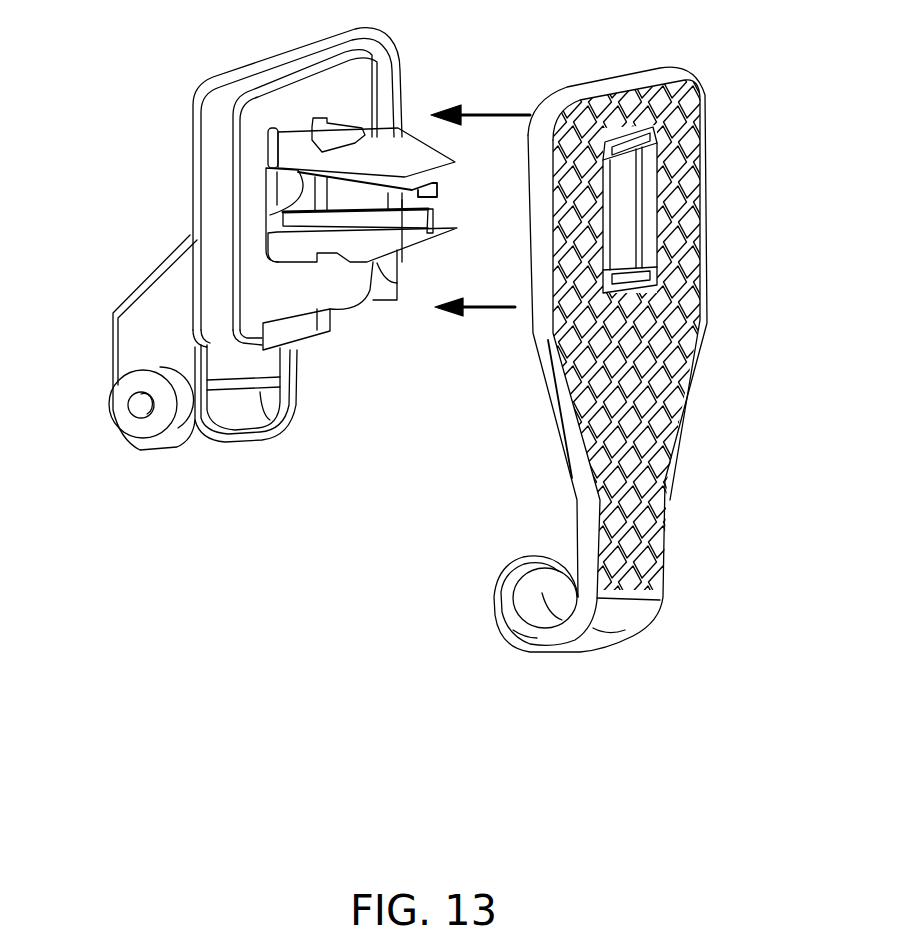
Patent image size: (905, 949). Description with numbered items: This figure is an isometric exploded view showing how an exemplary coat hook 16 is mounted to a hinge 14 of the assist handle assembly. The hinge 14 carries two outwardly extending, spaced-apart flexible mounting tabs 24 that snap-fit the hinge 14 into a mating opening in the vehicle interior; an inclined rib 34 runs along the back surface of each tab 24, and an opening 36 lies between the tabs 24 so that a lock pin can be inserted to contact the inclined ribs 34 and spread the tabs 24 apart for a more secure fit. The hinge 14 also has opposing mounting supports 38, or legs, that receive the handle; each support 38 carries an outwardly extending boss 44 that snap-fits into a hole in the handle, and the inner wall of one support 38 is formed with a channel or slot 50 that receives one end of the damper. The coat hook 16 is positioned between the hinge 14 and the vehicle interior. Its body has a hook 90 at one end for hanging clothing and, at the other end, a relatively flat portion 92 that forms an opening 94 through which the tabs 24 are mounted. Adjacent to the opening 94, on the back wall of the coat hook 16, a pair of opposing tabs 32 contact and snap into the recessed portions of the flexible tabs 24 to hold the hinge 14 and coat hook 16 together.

The hinge 14 is at (228, 77).
The coat hook 16 is at (627, 597).
The flexible mounting tabs 24 is at (370, 163).
The tabs 32 is at (700, 93).
The inclined rib 34 is at (425, 183).
The opening 36 is at (273, 183).
The mounting supports 38 is at (130, 337).
The bosses 44 is at (127, 421).
The channel or slot 50 is at (261, 395).
The hook 90 is at (527, 630).
The flat portion 92 is at (533, 115).
The opening 94 is at (622, 210).